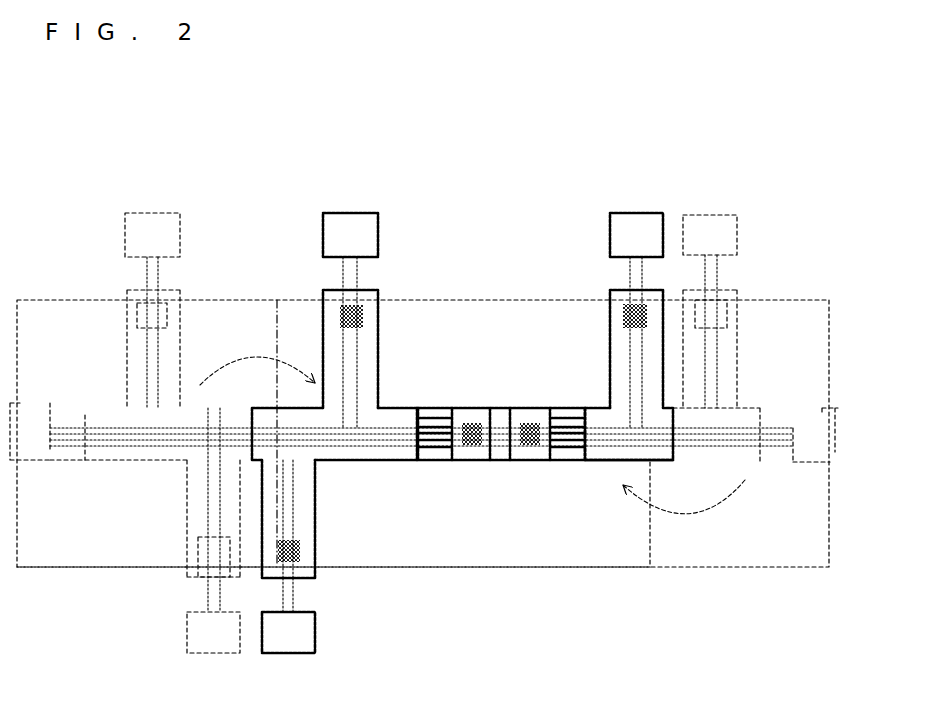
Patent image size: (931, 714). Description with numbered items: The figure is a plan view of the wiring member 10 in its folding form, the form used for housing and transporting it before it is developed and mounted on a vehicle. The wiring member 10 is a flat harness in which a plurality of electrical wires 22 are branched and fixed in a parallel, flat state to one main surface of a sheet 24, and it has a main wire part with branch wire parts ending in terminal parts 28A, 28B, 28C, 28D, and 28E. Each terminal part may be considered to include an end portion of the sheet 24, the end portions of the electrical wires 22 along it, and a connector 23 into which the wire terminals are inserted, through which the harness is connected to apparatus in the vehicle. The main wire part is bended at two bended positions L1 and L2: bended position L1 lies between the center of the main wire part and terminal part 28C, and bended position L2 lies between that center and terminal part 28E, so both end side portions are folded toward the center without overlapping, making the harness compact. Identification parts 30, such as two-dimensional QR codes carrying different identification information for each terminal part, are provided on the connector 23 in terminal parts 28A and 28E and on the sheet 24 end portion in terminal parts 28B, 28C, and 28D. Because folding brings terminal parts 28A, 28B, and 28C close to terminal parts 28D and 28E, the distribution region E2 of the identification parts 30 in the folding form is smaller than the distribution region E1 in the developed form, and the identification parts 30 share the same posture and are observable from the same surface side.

The wiring member 10 is at (553, 213).
The electrical wire 22 is at (420, 453).
The connector 23 is at (352, 213).
The sheet 24 is at (365, 352).
The terminal part 28A is at (373, 462).
The terminal part 28B is at (377, 290).
The terminal part 28C is at (317, 578).
The terminal part 28D is at (610, 291).
The terminal part 28E is at (672, 462).
The identification part 30 is at (365, 316).
The bended position L1 is at (243, 420).
The bended position L2 is at (707, 437).
The distribution region E1 is at (830, 546).
The distribution region E2 is at (652, 546).